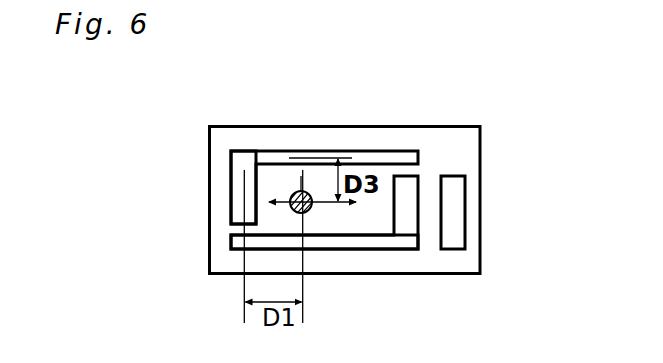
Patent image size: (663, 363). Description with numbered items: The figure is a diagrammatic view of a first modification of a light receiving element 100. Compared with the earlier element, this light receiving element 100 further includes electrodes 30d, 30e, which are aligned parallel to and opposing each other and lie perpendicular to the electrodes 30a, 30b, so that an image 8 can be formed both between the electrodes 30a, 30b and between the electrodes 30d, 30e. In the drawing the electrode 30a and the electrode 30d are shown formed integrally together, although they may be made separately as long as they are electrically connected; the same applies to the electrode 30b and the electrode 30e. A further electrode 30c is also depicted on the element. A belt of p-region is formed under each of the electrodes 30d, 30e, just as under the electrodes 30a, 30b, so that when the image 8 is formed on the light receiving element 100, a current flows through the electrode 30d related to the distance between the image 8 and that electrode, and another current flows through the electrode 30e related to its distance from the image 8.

The light receiving element 100 is at (451, 117).
The electrode 30a is at (233, 213).
The electrode 30b is at (407, 207).
The third coil portion 30c is at (456, 222).
The electrode 30d is at (383, 158).
The electrode 30e is at (380, 240).
The image 8 is at (301, 213).